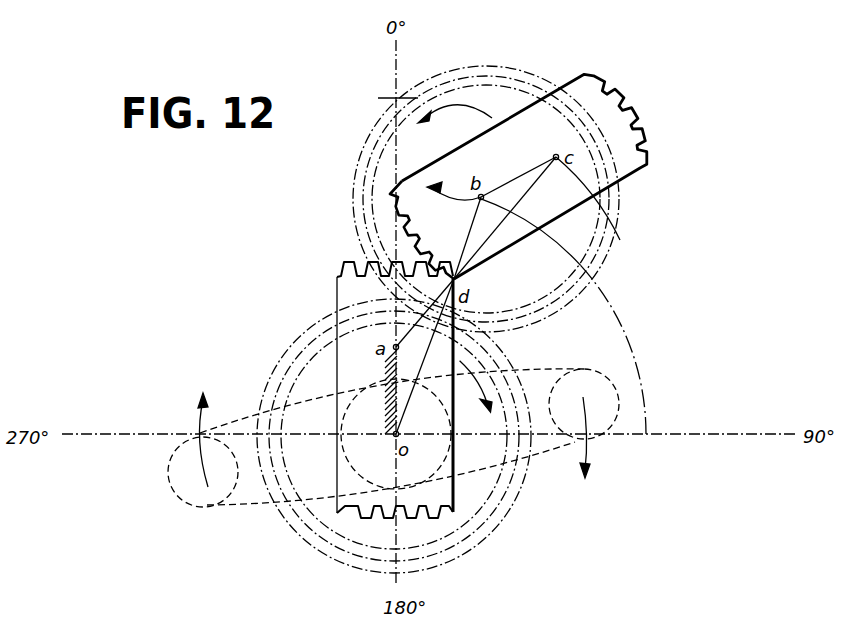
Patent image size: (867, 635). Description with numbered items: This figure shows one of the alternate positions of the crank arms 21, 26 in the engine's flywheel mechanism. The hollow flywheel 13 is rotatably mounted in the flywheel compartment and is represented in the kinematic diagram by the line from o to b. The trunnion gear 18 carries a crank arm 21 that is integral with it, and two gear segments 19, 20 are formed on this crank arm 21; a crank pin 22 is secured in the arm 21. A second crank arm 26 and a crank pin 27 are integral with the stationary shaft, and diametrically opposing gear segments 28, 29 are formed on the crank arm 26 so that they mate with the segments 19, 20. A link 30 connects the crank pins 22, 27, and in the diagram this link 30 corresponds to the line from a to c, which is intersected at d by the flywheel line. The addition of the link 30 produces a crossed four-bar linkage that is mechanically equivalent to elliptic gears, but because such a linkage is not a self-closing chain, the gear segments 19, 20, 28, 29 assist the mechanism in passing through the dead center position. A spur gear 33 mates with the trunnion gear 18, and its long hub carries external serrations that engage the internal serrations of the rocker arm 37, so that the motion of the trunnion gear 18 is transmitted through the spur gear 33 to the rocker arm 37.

The hollow flywheel 13 is at (470, 227).
The trunnion gear 18 is at (375, 200).
The gear segment 19 is at (640, 120).
The gear segment 20 is at (390, 193).
The crank arm 21 is at (501, 186).
The crank pin 22 is at (556, 152).
The crank arm 26 is at (452, 392).
The crank pin 27 is at (392, 347).
The gear segment 28 is at (352, 262).
The gear segment 29 is at (347, 508).
The link 30 is at (487, 240).
The spur gear 33 is at (303, 348).
The rocker arm 37 is at (240, 422).